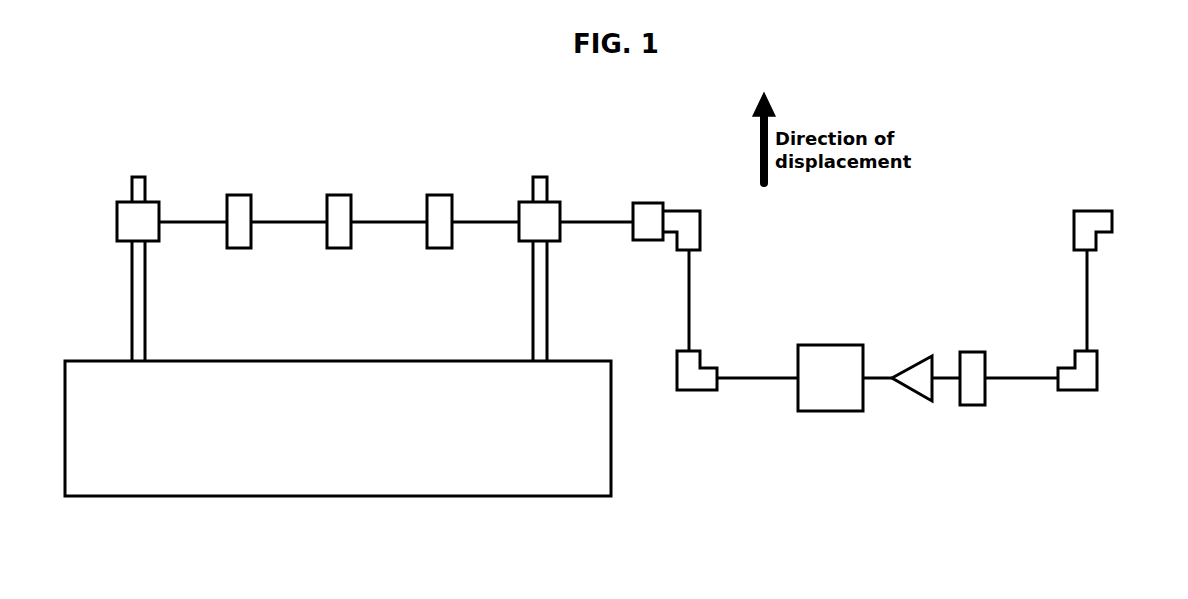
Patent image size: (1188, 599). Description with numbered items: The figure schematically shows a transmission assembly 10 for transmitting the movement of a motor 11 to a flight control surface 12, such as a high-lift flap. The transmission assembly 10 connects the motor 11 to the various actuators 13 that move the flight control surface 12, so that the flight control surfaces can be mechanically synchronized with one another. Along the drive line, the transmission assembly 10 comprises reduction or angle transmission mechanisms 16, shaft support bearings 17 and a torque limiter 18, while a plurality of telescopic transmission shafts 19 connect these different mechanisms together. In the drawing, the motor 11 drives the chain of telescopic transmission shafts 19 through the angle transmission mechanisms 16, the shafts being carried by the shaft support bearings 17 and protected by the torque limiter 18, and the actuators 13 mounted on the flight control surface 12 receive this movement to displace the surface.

The transmission assembly 10 is at (486, 87).
The motor 11 is at (830, 393).
The flight control surface 12 is at (341, 477).
The actuators 13 is at (137, 292).
The reduction or angle transmission mechanisms 16 is at (689, 218).
The shaft support bearings 17 is at (239, 212).
The torque limiter 18 is at (648, 218).
The telescopic transmission shafts 19 is at (185, 222).